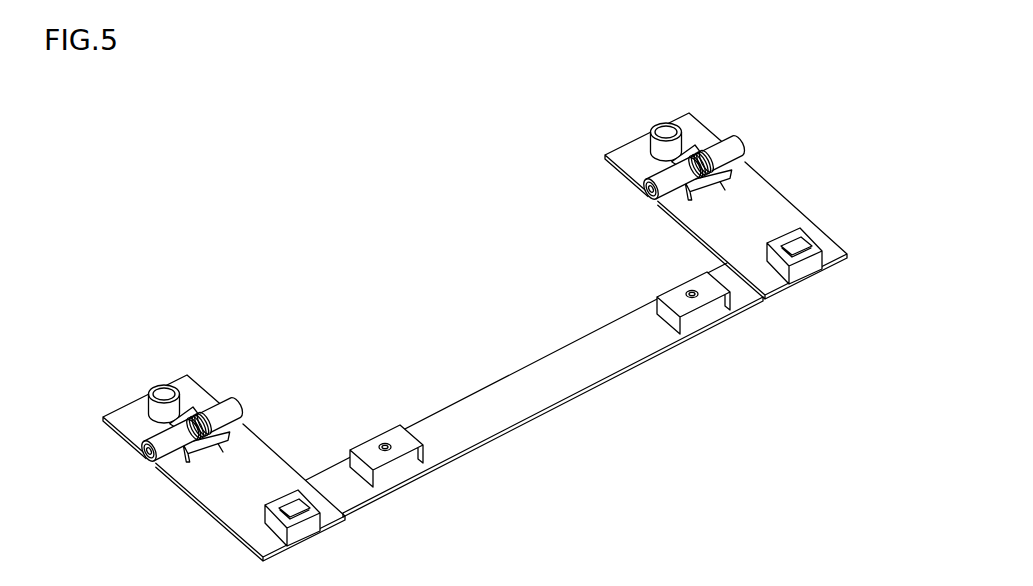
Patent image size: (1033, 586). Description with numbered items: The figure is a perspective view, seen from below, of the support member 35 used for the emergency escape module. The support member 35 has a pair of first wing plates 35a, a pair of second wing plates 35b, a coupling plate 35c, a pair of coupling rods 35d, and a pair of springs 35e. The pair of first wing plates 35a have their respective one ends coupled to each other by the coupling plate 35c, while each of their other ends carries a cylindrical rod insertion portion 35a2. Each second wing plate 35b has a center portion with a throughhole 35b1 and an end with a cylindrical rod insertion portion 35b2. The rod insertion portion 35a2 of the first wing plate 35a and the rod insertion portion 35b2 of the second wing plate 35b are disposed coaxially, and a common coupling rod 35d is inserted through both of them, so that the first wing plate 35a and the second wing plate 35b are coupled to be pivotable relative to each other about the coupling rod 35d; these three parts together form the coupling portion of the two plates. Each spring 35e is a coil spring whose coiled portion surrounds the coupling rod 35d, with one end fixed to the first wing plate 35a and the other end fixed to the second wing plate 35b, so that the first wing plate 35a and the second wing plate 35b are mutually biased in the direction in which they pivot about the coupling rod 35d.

The support member 35 is at (448, 309).
The first wing plate 35a is at (243, 467).
The rod insertion portion 35a2 is at (190, 460).
The second wing plate 35b is at (118, 417).
The throughhole 35b1 is at (163, 392).
The rod insertion portion 35b2 is at (228, 412).
The coupling plate 35c is at (540, 387).
The coupling rod 35d is at (148, 455).
The spring 35e is at (201, 418).